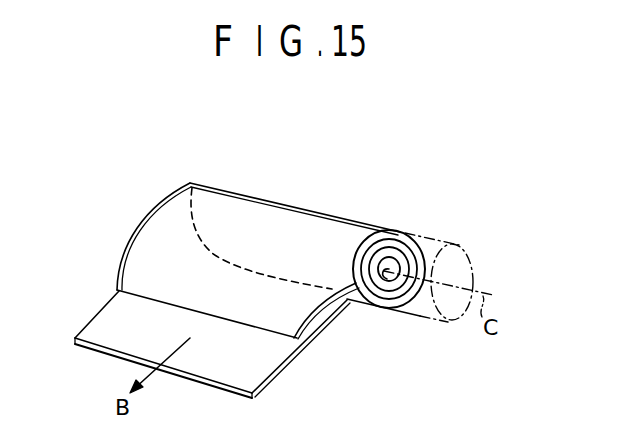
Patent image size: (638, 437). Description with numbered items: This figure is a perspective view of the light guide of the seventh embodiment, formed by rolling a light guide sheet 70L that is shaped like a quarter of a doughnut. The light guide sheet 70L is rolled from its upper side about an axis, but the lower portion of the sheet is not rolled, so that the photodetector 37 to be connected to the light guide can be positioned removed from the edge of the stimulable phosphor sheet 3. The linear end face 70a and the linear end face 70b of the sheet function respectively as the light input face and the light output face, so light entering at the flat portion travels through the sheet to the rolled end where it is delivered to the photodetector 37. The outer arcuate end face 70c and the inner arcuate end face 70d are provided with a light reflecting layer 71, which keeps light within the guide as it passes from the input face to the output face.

The stimulable phosphor sheet 3 is at (206, 358).
The photodetector 37 is at (418, 315).
The light guide sheet 70L is at (314, 201).
The linear end face 70a is at (248, 327).
The linear end face 70b is at (410, 237).
The outer arcuate end face 70c is at (160, 197).
The inner arcuate end face 70d is at (339, 309).
The light reflecting layer 71 is at (134, 229).